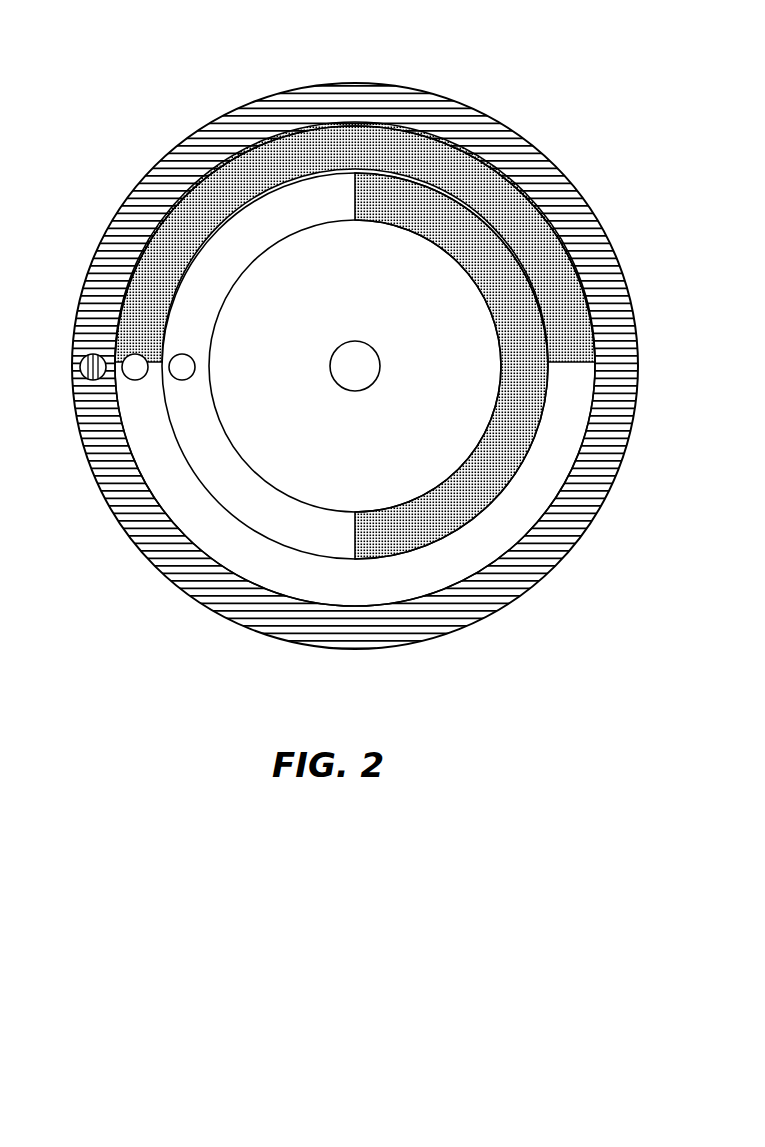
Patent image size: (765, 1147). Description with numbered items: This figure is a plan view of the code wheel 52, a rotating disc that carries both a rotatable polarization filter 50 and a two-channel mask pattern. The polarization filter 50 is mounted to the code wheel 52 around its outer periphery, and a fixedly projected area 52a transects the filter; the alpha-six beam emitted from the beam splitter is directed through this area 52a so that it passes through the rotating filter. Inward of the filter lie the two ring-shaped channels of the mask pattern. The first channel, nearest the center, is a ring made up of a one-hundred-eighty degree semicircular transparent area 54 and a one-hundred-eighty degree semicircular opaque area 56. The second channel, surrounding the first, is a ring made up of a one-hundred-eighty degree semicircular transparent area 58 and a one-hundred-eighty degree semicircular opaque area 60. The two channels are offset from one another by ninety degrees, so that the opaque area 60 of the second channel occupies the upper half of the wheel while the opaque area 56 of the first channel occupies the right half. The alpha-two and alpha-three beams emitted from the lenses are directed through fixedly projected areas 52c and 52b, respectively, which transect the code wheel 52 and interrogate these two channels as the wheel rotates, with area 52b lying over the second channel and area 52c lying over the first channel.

The rotatable polarization filter 50 is at (572, 177).
The code wheel 52 is at (237, 216).
The fixedly projected area 52a is at (80, 367).
The fixedly projected area 52b is at (135, 380).
The fixedly projected area 52c is at (183, 380).
The semicircular transparent area 54 is at (229, 277).
The semicircular opaque area 56 is at (457, 263).
The semicircular transparent area 58 is at (168, 472).
The semicircular opaque area 60 is at (171, 305).